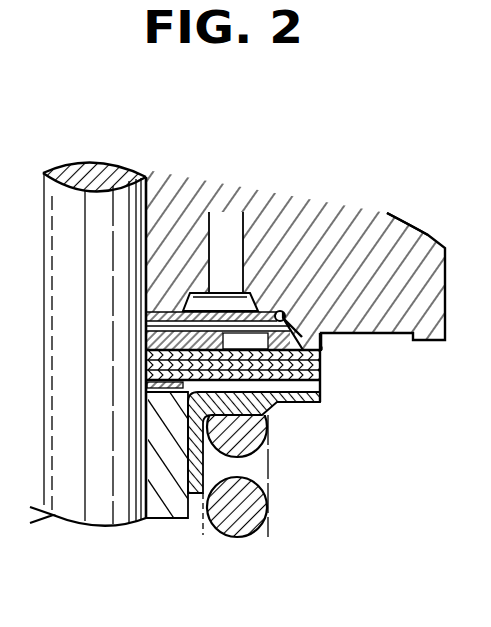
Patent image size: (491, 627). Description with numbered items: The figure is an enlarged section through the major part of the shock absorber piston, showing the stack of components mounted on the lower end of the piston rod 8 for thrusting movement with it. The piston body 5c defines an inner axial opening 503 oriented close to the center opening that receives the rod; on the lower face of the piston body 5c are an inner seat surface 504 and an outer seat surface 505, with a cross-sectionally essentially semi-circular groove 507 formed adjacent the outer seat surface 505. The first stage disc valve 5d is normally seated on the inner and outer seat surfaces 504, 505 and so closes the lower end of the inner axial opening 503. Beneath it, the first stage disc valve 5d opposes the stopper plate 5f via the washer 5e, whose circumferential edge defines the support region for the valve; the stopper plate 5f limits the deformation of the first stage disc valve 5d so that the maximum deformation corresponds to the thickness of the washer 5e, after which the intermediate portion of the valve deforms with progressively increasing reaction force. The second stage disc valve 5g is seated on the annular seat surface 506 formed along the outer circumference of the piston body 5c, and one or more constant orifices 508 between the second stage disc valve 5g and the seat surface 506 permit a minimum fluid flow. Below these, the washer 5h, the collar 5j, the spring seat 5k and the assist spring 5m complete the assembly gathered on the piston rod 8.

The piston rod 8 is at (78, 190).
The piston body 5c is at (402, 240).
The inner axial opening 503 is at (223, 225).
The outer seat surface 505 is at (308, 222).
The semi-circular groove 507 is at (283, 312).
The first stage disc valve 5d is at (203, 293).
The stopper plate 5f is at (300, 325).
The inner seat surface 504 is at (147, 320).
The washer 5e is at (145, 348).
The constant orifice 508 is at (326, 349).
The annular seat surface 506 is at (322, 368).
The second stage disc valve 5g is at (321, 396).
The washer 5h is at (186, 385).
The spring seat 5k is at (263, 425).
The assist spring 5m is at (262, 533).
The collar 5j is at (160, 478).